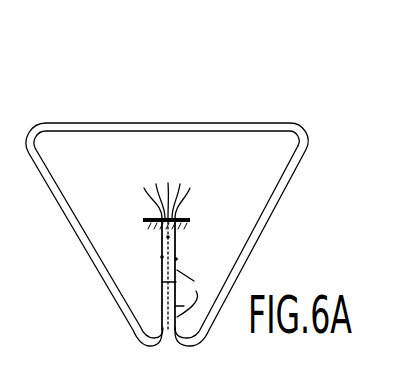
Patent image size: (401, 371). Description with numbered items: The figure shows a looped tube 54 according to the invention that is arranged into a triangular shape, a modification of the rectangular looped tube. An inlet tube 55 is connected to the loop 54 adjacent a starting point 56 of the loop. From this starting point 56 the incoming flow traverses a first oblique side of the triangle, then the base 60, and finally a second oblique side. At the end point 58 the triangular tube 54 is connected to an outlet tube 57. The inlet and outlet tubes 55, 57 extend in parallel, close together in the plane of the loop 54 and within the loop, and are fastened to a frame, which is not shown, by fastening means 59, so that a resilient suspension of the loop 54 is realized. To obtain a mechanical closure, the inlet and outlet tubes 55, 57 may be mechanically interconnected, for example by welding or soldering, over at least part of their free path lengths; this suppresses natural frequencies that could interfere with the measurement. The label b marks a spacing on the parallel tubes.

The looped tube 54 is at (206, 113).
The inlet tube 55 is at (162, 257).
The starting point 56 is at (140, 338).
The outlet tube 57 is at (176, 259).
The end point 58 is at (203, 339).
The fastening means 59 is at (152, 216).
The base 60 is at (165, 122).
The spacing dimension b is at (192, 293).